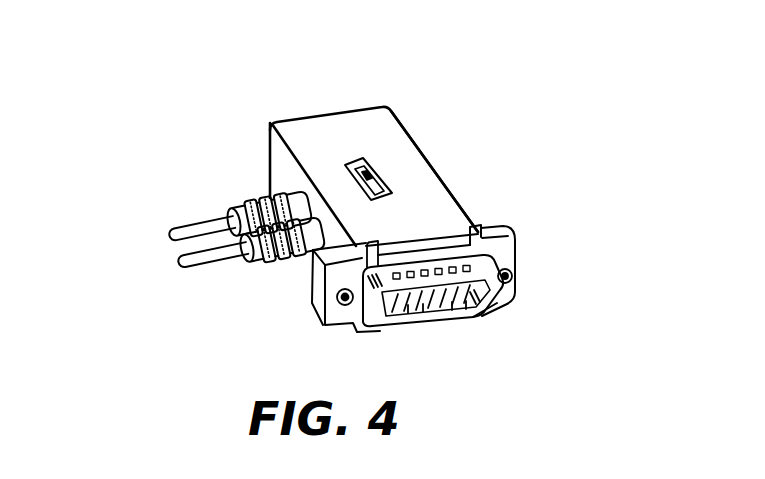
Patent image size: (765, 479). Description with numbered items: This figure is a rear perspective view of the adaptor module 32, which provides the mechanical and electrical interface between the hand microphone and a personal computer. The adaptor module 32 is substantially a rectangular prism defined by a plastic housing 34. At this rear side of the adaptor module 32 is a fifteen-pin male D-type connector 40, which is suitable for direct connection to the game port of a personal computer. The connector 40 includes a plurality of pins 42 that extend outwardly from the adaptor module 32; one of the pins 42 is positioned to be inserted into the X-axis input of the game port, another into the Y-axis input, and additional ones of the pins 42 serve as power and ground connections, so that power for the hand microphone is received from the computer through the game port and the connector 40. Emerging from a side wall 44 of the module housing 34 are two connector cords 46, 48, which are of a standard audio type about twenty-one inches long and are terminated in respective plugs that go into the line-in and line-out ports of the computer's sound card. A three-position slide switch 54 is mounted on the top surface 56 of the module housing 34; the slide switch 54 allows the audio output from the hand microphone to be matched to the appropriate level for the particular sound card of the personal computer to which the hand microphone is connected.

The adaptor module 32 is at (446, 139).
The housing 34 is at (293, 138).
The side wall 44 is at (281, 168).
The slide switch 54 is at (365, 150).
The top surface 56 is at (452, 210).
The connector cord 48 is at (178, 226).
The connector cord 46 is at (222, 262).
The connector 40 is at (449, 312).
The pins 42 is at (437, 316).